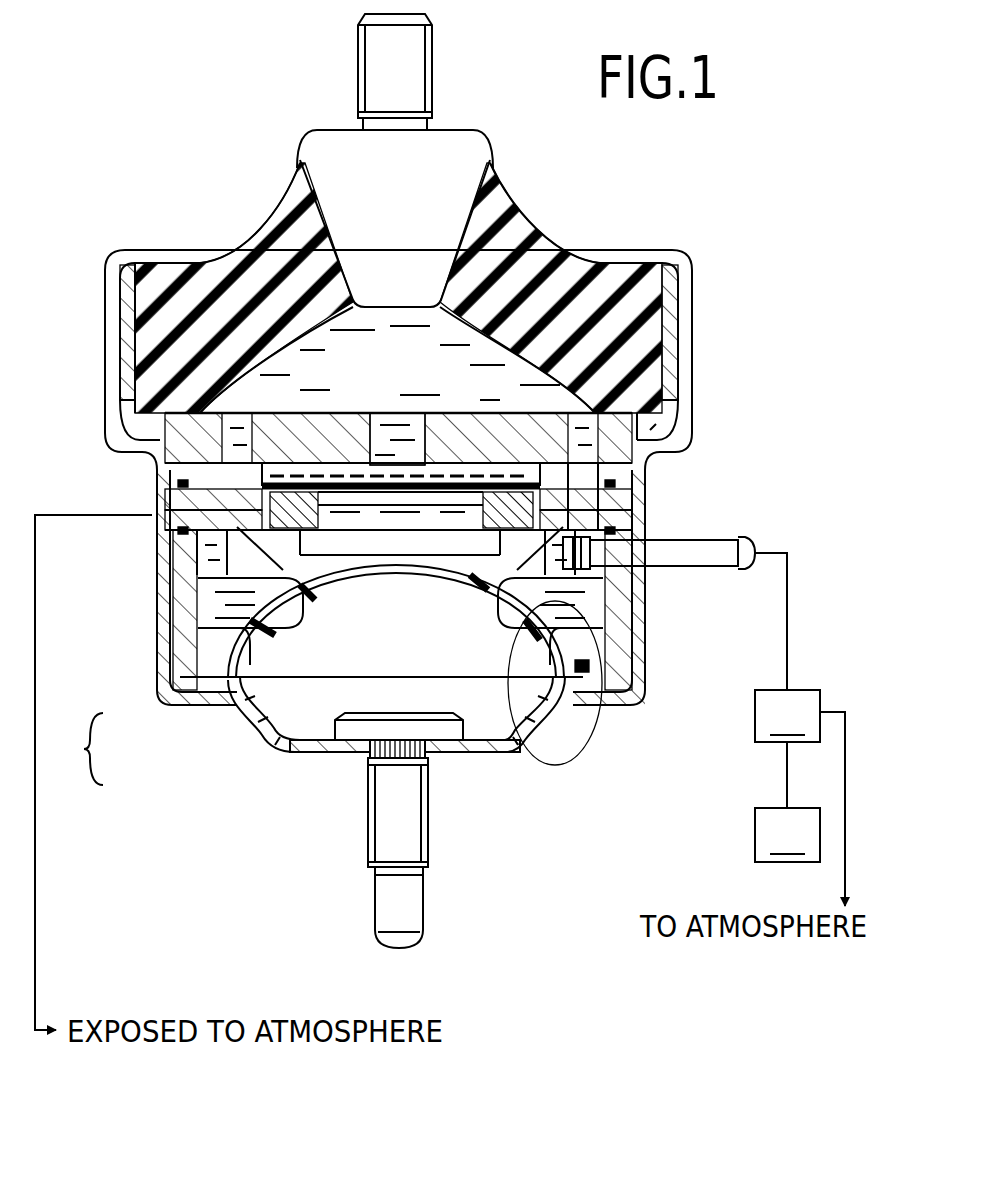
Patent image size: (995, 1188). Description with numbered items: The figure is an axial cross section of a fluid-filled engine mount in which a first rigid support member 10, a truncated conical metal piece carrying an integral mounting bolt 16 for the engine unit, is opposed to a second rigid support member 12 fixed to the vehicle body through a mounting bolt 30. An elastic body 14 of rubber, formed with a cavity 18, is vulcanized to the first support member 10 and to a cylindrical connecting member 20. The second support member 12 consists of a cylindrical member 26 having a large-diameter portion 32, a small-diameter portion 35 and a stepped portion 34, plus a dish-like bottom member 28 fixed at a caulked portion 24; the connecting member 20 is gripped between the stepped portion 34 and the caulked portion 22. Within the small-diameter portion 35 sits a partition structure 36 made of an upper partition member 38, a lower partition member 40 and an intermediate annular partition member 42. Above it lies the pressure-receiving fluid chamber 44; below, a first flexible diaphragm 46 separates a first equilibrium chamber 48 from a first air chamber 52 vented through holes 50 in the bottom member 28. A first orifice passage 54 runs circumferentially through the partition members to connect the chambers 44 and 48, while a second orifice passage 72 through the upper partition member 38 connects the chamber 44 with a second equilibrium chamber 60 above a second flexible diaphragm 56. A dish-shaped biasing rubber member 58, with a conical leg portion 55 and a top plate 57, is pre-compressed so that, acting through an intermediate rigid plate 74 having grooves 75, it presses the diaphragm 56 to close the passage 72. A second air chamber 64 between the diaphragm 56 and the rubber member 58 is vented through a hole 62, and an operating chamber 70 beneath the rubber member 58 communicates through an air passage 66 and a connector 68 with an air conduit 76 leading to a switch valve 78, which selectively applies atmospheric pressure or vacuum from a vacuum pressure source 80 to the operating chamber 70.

The first rigid support member 10 is at (466, 142).
The second rigid support member 12 is at (80, 749).
The elastic body 14 is at (546, 248).
The mounting bolt 16 is at (372, 58).
The cavity 18 is at (262, 395).
The cylindrical connecting member 20 is at (122, 310).
The caulked portion 22 is at (663, 250).
The caulked portion 24 is at (594, 700).
The cylindrical member 26 is at (146, 670).
The bottom member 28 is at (245, 732).
The mounting bolt 30 is at (382, 826).
The large-diameter portion 32 is at (686, 358).
The stepped portion 34 is at (663, 447).
The small-diameter portion 35 is at (166, 606).
The partition structure 36 is at (192, 272).
The upper partition member 38 is at (185, 478).
The lower partition member 40 is at (184, 566).
The intermediate annular partition member 42 is at (612, 498).
The pressure-receiving fluid chamber 44 is at (490, 292).
The first flexible diaphragm 46 is at (528, 728).
The first variable-volume equilibrium chamber 48 is at (216, 613).
The holes 50 is at (300, 752).
The first air chamber 52 is at (262, 735).
The first orifice passage 54 is at (605, 521).
The leg portion 55 is at (470, 540).
The second flexible diaphragm 56 is at (362, 472).
The top plate 57 is at (381, 560).
The biasing rubber member 58 is at (428, 515).
The second equilibrium chamber 60 is at (512, 468).
The hole 62 is at (185, 499).
The second air chamber 64 is at (352, 545).
The air passage 66 is at (522, 556).
The connector 68 is at (681, 557).
The operating chamber 70 is at (363, 515).
The second orifice passage 72 is at (401, 430).
The intermediate rigid plate 74 is at (395, 515).
The grooves 75 is at (326, 470).
The air conduit 76 is at (789, 608).
The switch valve 78 is at (800, 798).
The vacuum pressure source 80 is at (787, 835).